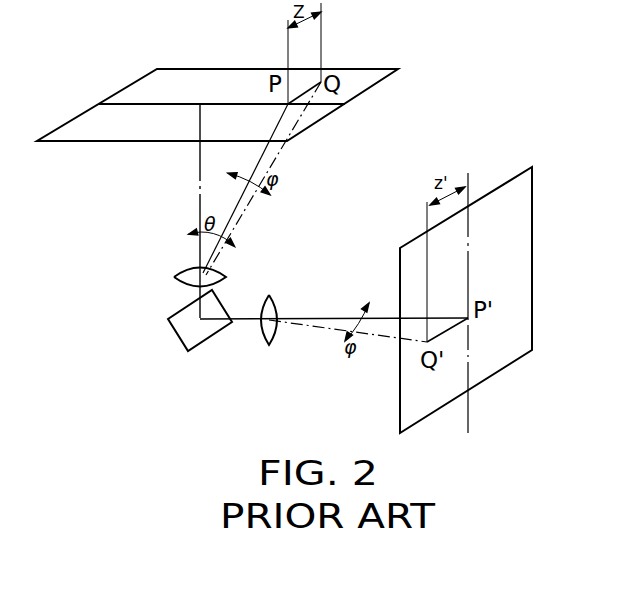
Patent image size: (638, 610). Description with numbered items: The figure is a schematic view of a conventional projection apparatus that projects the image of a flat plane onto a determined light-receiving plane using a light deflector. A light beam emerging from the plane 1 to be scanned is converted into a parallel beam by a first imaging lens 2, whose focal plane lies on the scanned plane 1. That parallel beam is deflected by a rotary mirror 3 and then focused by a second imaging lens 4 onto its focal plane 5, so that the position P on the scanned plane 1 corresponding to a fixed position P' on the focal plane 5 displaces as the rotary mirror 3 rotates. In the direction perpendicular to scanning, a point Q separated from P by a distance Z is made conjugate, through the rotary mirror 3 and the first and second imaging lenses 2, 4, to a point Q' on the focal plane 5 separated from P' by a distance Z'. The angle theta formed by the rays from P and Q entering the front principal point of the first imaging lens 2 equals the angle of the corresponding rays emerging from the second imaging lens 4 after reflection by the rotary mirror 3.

The plane to be scanned 1 is at (363, 68).
The first imaging lens 2 is at (186, 270).
The rotary mirror 3 is at (182, 338).
The second imaging lens 4 is at (275, 333).
The focal plane 5 is at (532, 247).